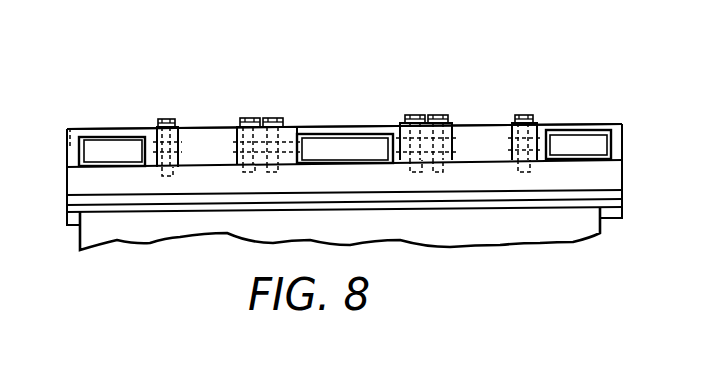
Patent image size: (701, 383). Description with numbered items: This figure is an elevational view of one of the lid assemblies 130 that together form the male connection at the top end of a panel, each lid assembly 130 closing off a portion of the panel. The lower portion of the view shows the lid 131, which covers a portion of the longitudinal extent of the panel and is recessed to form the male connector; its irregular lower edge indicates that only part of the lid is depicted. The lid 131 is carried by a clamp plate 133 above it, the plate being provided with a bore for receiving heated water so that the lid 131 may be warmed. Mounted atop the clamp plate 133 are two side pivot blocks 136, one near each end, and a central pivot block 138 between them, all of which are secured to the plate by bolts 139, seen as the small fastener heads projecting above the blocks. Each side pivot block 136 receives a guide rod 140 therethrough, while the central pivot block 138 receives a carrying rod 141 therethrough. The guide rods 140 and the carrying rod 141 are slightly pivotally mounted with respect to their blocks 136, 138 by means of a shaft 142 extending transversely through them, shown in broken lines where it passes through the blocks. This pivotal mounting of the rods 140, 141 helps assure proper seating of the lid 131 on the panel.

The lid assembly 130 is at (510, 79).
The lid 131 is at (585, 225).
The clamp plate 133 is at (617, 175).
The side pivot block 136 is at (113, 130).
The central pivot block 138 is at (372, 127).
The bolt 139 is at (173, 121).
The guide rod 140 is at (108, 153).
The carrying rod 141 is at (332, 141).
The shaft 142 is at (70, 128).